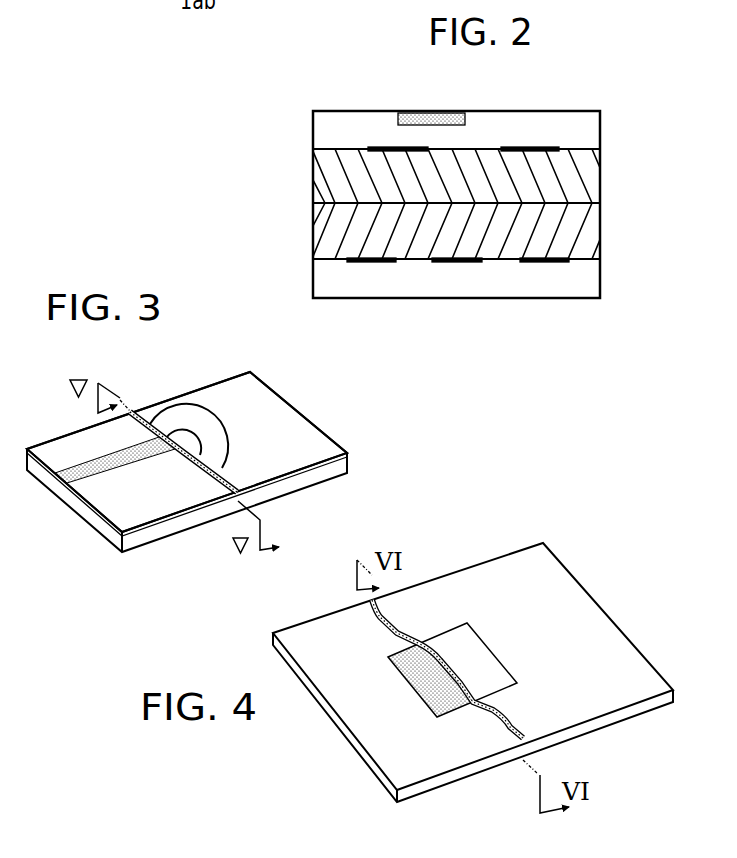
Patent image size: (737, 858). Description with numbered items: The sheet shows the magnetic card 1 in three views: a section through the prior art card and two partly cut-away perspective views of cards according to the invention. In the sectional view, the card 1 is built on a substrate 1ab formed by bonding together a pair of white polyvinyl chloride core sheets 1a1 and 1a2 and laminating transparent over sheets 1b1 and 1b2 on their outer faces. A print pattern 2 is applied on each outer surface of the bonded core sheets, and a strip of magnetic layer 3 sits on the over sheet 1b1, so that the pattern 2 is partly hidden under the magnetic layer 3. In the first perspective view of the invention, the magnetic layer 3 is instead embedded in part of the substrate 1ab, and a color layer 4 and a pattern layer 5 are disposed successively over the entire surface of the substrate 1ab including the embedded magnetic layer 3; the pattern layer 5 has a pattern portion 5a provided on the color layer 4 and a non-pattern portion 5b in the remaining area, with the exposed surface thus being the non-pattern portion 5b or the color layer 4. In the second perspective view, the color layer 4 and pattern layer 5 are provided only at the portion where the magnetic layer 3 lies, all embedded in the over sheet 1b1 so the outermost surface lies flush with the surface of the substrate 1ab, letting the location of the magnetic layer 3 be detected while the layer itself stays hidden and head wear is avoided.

In FIG. 2, the magnetic card 1 is at (298, 202).
In FIG. 3, the magnetic card 1 is at (50, 438).
In FIG. 2, the substrate 1ab is at (652, 110).
In FIG. 3, the substrate 1ab is at (348, 463).
In FIG. 4, the substrate 1ab is at (577, 602).
In FIG. 2, the core sheet 1a1 is at (602, 180).
In FIG. 2, the core sheet 1a2 is at (602, 233).
In FIG. 2, the over sheet 1b1 is at (602, 133).
In FIG. 2, the over sheet 1b2 is at (602, 280).
In FIG. 2, the pattern 2 is at (380, 148).
In FIG. 2, the magnetic layer 3 is at (440, 110).
In FIG. 3, the magnetic layer 3 is at (71, 482).
In FIG. 4, the magnetic layer 3 is at (437, 717).
In FIG. 3, the color layer 4 is at (272, 402).
In FIG. 4, the pattern layer 5 is at (458, 632).
In FIG. 3, the pattern portion 5a is at (195, 420).
In FIG. 3, the non-pattern portion 5b is at (223, 452).